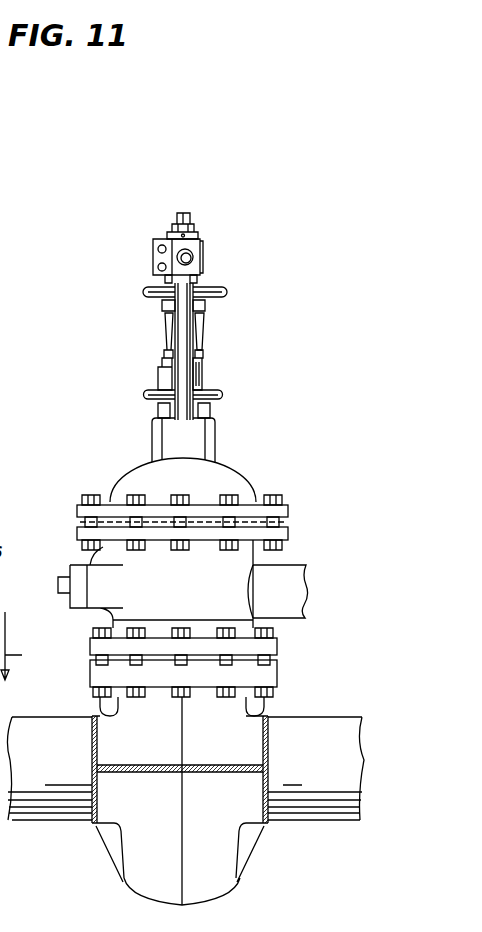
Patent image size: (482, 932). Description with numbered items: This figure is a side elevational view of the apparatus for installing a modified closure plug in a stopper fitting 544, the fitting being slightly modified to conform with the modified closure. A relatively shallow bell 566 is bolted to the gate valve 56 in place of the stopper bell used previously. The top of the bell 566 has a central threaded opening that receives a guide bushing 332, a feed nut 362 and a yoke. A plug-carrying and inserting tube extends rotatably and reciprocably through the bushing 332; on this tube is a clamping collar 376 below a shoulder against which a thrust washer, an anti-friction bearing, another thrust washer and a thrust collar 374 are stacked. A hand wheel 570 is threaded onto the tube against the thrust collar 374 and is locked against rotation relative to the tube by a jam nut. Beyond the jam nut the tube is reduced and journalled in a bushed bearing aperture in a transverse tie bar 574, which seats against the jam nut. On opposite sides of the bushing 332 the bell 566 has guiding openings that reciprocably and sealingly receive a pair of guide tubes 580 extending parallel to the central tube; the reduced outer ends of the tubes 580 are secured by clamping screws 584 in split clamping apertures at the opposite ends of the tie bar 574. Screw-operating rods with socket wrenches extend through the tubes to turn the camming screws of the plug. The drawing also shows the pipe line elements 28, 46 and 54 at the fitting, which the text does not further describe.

The clamping screws 584 is at (158, 266).
The transverse tie bar 574 is at (203, 258).
The hand wheel 570 is at (225, 291).
The guide tubes 580 is at (175, 308).
The thrust collar 374 is at (205, 305).
The clamping collar 376 is at (167, 352).
The feed nut 362 is at (208, 382).
The guide bushing 332 is at (212, 410).
The bell 566 is at (243, 484).
The gate valve 56 is at (285, 562).
The flange 54 is at (276, 633).
The flow direction 28 is at (15, 646).
The pipe 46 is at (34, 815).
The stopper fitting 544 is at (116, 885).